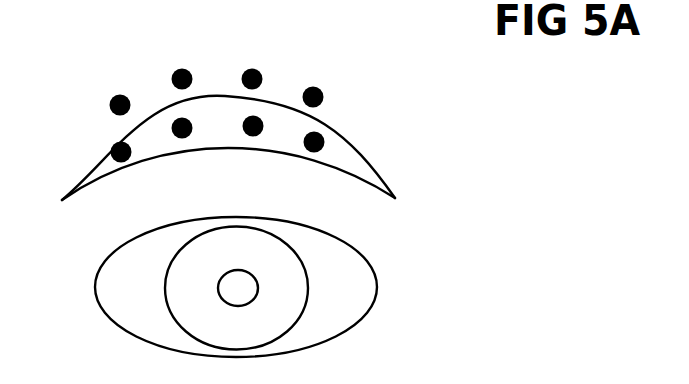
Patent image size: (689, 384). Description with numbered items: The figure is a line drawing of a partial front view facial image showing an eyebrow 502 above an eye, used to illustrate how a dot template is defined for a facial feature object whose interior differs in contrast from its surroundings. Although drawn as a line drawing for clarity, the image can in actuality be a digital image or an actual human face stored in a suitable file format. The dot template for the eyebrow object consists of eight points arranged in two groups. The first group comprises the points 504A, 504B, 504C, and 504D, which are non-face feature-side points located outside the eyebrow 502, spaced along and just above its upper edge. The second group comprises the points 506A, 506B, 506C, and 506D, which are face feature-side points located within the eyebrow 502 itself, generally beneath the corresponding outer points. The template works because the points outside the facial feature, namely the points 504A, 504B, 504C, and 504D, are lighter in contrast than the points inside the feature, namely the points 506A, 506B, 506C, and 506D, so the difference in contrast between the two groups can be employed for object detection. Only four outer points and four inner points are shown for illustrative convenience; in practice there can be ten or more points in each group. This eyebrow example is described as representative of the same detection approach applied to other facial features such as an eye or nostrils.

The eyebrow 502 is at (386, 180).
The point 504A is at (112, 102).
The point 504B is at (177, 73).
The point 504C is at (283, 28).
The point 504D is at (352, 50).
The point 506A is at (120, 158).
The point 506B is at (182, 140).
The point 506C is at (250, 136).
The point 506D is at (416, 98).